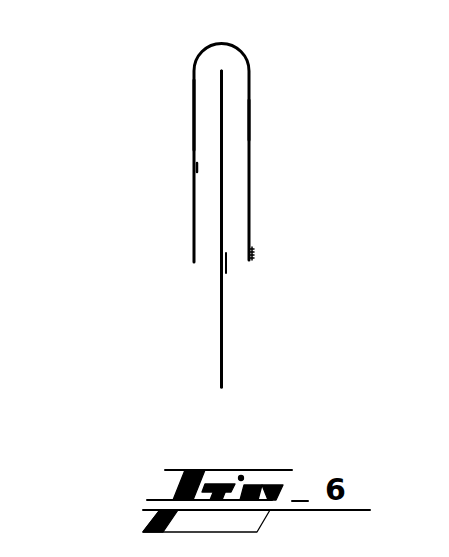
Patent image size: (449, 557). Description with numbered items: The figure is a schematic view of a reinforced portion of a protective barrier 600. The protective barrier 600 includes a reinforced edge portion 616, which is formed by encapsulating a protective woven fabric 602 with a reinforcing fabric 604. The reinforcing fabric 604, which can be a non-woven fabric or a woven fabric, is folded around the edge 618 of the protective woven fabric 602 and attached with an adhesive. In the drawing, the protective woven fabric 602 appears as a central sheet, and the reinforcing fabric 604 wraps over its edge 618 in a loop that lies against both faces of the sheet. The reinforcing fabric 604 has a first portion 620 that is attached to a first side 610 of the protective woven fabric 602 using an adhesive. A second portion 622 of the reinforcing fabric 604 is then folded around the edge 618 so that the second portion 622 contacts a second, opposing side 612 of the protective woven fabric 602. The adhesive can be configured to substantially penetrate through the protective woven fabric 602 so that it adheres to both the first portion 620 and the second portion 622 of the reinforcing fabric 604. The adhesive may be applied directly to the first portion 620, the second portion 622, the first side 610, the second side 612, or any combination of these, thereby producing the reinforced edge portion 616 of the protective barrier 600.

The protective barrier 600 is at (194, 271).
The protective woven fabric 602 is at (222, 373).
The reinforcing fabric 604 is at (193, 84).
The first side 610 is at (222, 322).
The second side 612 is at (223, 355).
The reinforced edge portion 616 is at (249, 118).
The edge 618 is at (222, 70).
The first portion 620 is at (193, 168).
The second portion 622 is at (249, 220).